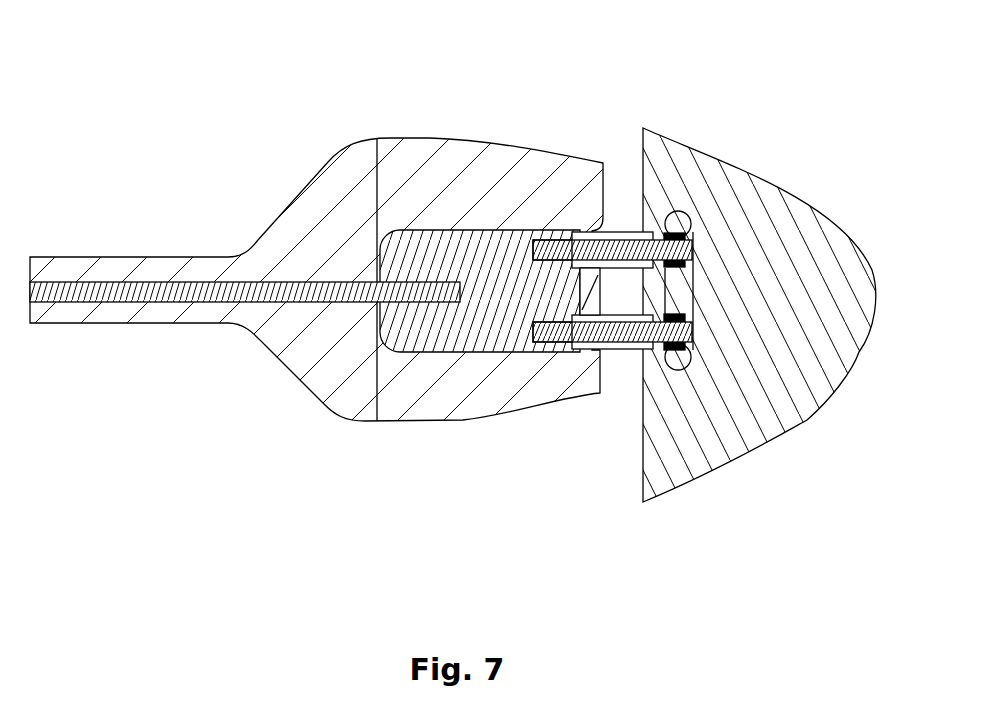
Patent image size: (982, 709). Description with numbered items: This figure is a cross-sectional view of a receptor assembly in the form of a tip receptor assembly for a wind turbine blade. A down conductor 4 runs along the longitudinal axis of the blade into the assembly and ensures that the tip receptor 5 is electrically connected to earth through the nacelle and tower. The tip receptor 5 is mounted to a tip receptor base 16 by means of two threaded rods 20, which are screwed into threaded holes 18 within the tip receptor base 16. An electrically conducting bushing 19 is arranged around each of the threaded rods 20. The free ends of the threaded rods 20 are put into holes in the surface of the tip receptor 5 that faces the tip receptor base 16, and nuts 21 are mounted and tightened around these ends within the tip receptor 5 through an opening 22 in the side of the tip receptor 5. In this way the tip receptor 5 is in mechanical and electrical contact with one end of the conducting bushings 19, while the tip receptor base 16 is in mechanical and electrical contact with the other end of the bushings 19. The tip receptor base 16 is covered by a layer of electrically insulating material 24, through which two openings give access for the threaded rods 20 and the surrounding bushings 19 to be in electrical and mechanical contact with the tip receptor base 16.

The down conductor 4 is at (203, 290).
The tip receptor 5 is at (723, 243).
The tip receptor base 16 is at (410, 255).
The threaded holes 18 is at (523, 257).
The electrically conducting bushing 19 is at (597, 233).
The threaded rods 20 is at (563, 253).
The nuts 21 is at (680, 233).
The opening 22 is at (663, 290).
The layer of electrically insulating material 24 is at (348, 164).